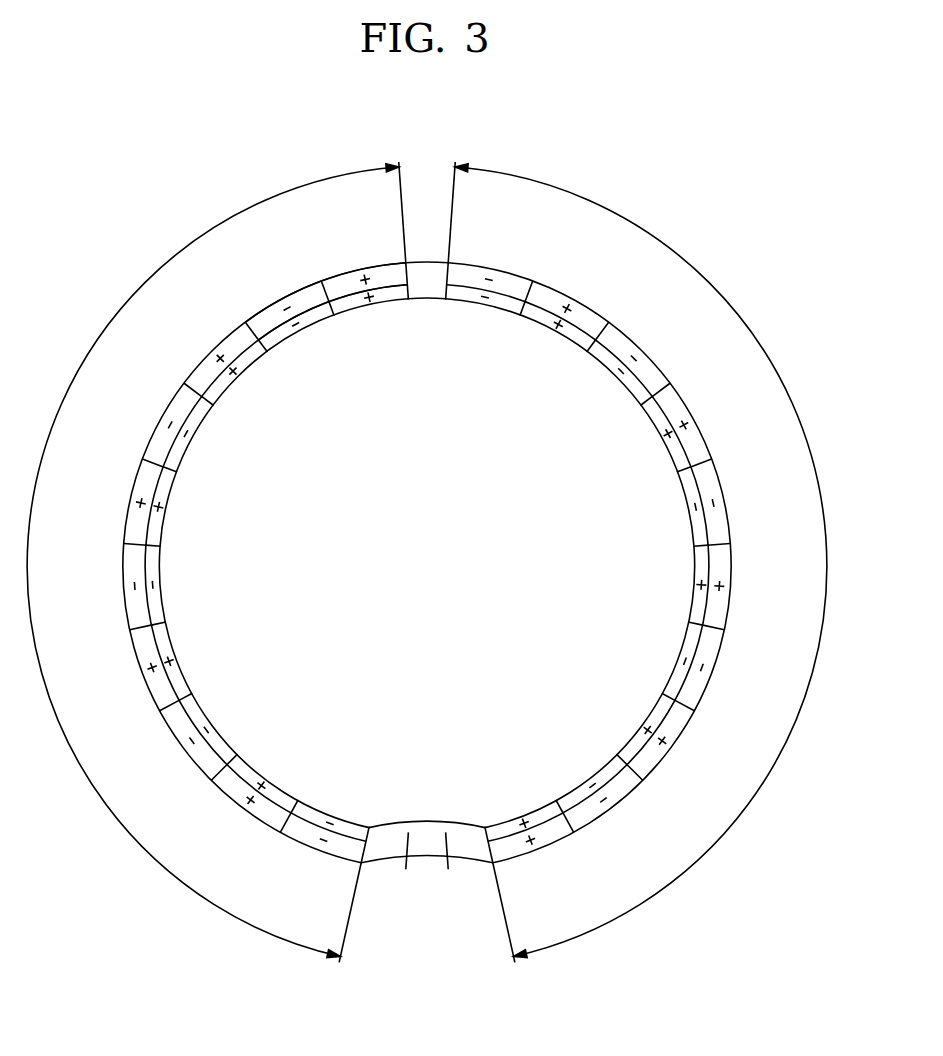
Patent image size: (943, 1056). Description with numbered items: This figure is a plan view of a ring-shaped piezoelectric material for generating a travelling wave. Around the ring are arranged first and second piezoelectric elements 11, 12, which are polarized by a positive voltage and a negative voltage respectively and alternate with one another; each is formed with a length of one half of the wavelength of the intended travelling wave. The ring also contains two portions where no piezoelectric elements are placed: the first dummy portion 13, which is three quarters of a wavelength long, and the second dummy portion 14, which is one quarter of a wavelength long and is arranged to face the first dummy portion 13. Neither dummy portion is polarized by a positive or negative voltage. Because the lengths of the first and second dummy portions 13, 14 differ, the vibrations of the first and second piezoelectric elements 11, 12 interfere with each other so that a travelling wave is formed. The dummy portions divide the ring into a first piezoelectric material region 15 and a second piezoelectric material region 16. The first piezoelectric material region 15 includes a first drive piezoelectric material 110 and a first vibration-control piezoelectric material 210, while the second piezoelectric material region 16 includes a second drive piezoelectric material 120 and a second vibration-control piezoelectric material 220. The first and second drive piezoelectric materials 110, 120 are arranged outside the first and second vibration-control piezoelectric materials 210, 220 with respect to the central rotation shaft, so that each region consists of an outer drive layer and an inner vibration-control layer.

The first piezoelectric element 11 is at (346, 282).
The second piezoelectric element 12 is at (260, 320).
The first dummy portion 13 is at (466, 856).
The second dummy portion 14 is at (427, 270).
The first piezoelectric material region 15 is at (265, 200).
The second piezoelectric material region 16 is at (589, 200).
The first drive piezoelectric material 110 is at (265, 544).
The second drive piezoelectric material 120 is at (654, 357).
The first vibration-control piezoelectric material 210 is at (297, 335).
The second vibration-control piezoelectric material 220 is at (557, 335).